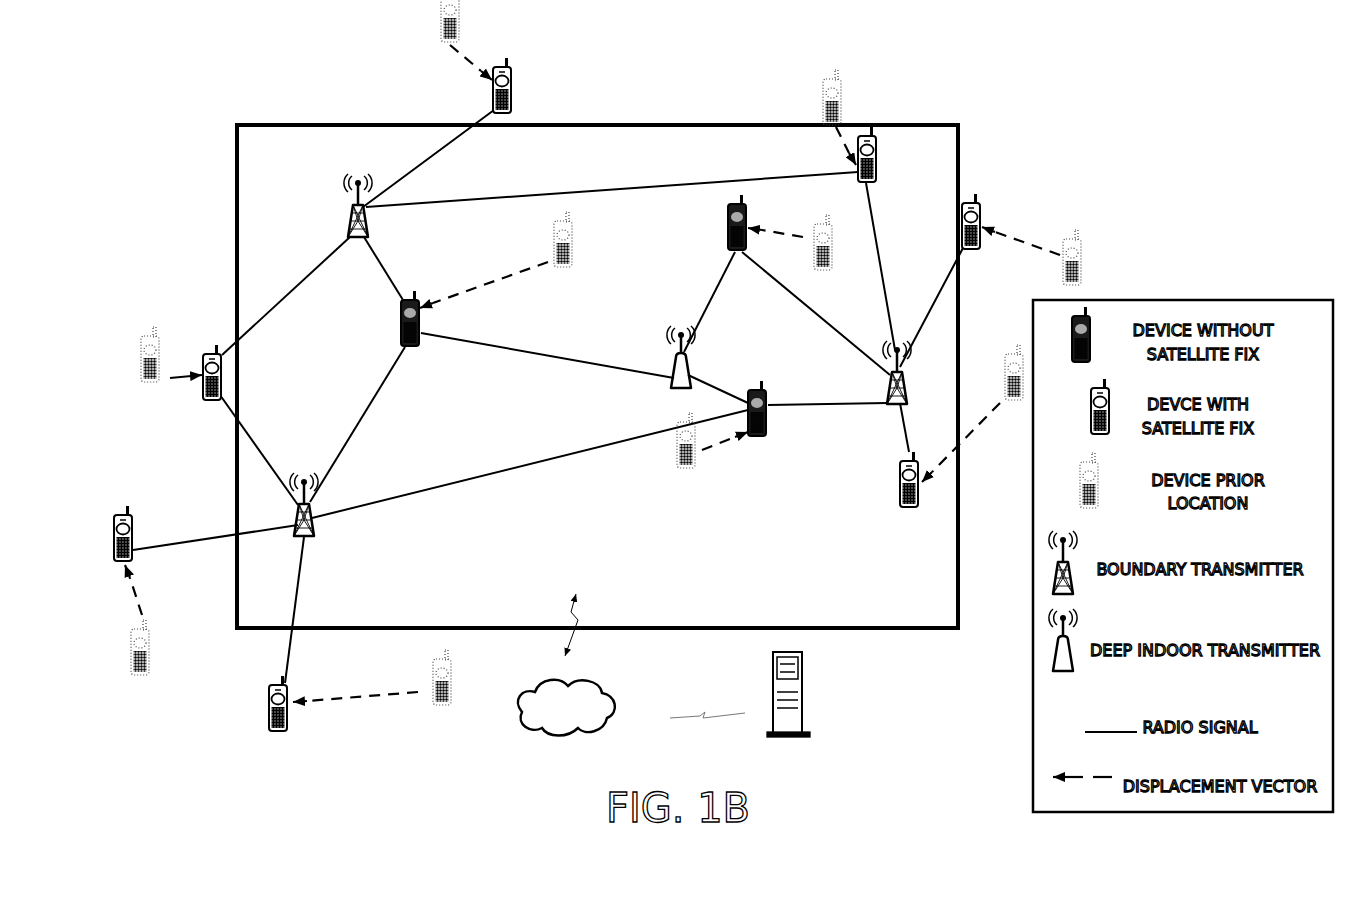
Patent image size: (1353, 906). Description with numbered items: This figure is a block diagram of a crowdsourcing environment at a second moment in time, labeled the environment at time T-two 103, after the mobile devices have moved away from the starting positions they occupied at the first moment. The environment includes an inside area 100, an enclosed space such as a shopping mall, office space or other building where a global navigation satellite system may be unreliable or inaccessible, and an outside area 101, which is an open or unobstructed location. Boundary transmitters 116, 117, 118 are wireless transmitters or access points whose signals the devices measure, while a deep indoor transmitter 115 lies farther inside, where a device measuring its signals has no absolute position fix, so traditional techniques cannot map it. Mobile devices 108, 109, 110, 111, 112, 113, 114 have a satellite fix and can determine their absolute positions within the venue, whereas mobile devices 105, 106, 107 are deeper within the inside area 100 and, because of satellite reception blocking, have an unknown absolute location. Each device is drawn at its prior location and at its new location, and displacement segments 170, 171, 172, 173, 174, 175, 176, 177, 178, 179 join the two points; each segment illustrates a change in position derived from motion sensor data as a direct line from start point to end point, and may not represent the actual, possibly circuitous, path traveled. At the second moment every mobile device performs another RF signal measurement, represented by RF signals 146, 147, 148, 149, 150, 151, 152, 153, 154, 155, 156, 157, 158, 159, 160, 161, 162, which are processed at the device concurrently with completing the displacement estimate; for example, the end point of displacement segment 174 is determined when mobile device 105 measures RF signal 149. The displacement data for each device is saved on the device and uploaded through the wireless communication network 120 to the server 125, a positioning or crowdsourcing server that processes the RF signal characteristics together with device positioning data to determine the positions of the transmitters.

The inside area 100 is at (292, 177).
The outside area 101 is at (209, 134).
The environment at time T2 103 is at (1285, 185).
The mobile device 105 is at (473, 288).
The mobile device 106 is at (787, 246).
The mobile device 107 is at (735, 438).
The mobile device 108 is at (479, 58).
The mobile device 109 is at (868, 116).
The mobile device 110 is at (1051, 239).
The mobile device 111 is at (180, 379).
The mobile device 112 is at (963, 441).
The mobile device 113 is at (150, 606).
The mobile device 114 is at (363, 705).
The deep indoor transmitter 115 is at (672, 360).
The boundary transmitter 116 is at (375, 266).
The boundary transmitter 117 is at (352, 544).
The boundary transmitter 118 is at (941, 401).
The network 120 is at (598, 690).
The server 125 is at (802, 697).
The RF signal 146 is at (472, 170).
The RF signal 147 is at (662, 187).
The RF signal 148 is at (279, 297).
The RF signal 149 is at (435, 277).
The RF signal 150 is at (743, 331).
The RF signal 151 is at (910, 237).
The RF signal 152 is at (937, 307).
The RF signal 153 is at (837, 343).
The RF signal 154 is at (847, 401).
The RF signal 155 is at (892, 454).
The RF signal 156 is at (745, 380).
The RF signal 157 is at (552, 349).
The RF signal 158 is at (407, 433).
The RF signal 159 is at (503, 469).
The RF signal 160 is at (287, 433).
The RF signal 161 is at (230, 567).
The RF signal 162 is at (345, 612).
The displacement segment 170 is at (457, 84).
The displacement segment 171 is at (815, 152).
The displacement segment 172 is at (1052, 237).
The displacement segment 173 is at (805, 221).
The displacement segment 174 is at (502, 277).
The displacement segment 175 is at (997, 467).
The displacement segment 176 is at (740, 471).
The displacement segment 177 is at (197, 358).
The displacement segment 178 is at (129, 623).
The displacement segment 179 is at (372, 719).